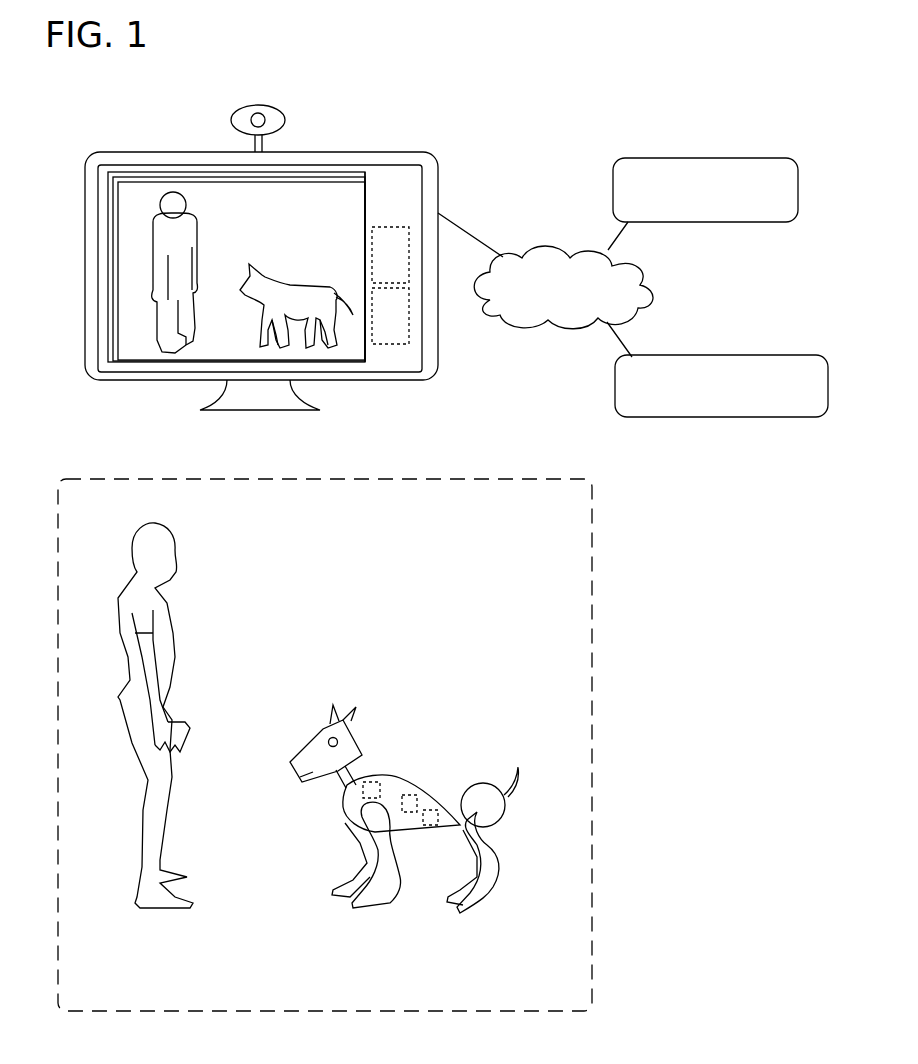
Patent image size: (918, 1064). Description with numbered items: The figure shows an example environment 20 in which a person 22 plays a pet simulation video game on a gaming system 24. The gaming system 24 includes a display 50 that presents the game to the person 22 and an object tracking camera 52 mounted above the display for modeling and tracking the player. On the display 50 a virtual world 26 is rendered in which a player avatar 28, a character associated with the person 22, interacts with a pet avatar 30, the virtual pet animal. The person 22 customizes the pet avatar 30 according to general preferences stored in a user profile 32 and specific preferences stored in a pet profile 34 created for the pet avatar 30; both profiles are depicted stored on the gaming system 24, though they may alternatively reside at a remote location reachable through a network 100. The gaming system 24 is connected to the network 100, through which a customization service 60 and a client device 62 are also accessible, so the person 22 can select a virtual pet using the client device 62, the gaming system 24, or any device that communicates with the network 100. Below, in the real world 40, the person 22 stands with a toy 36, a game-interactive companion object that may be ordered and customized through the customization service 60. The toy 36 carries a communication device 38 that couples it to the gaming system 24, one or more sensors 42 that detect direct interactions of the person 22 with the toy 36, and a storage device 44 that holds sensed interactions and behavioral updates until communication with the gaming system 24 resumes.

The environment 20 is at (703, 70).
The person 22 is at (123, 595).
The gaming system 24 is at (97, 121).
The virtual world 26 is at (367, 218).
The player avatar 28 is at (197, 226).
The pet avatar 30 is at (287, 283).
The user profile 32 is at (380, 264).
The pet profile 34 is at (380, 326).
The toy 36 is at (398, 773).
The communication device 38 is at (411, 794).
The real world 40 is at (493, 479).
The sensors 42 is at (432, 826).
The storage device 44 is at (369, 781).
The display 50 is at (366, 152).
The object tracking camera 52 is at (270, 105).
The customization service 60 is at (768, 210).
The client device 62 is at (812, 398).
The network 100 is at (638, 298).